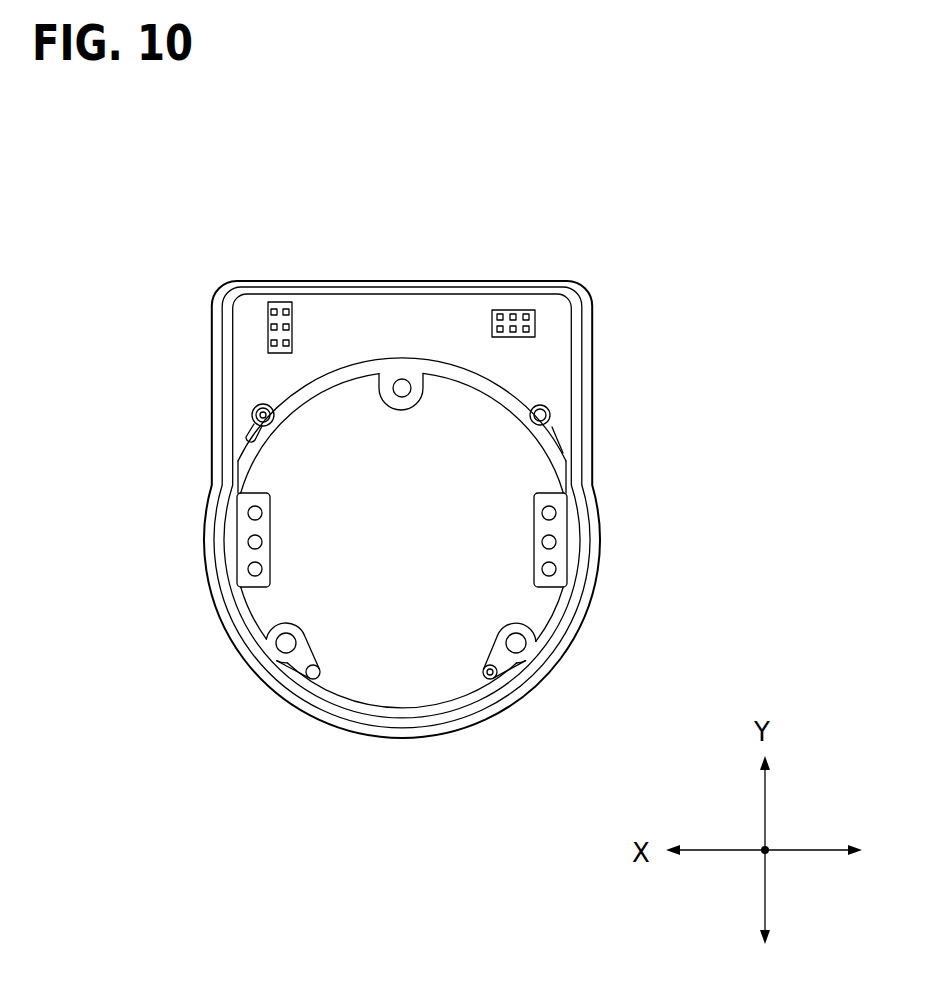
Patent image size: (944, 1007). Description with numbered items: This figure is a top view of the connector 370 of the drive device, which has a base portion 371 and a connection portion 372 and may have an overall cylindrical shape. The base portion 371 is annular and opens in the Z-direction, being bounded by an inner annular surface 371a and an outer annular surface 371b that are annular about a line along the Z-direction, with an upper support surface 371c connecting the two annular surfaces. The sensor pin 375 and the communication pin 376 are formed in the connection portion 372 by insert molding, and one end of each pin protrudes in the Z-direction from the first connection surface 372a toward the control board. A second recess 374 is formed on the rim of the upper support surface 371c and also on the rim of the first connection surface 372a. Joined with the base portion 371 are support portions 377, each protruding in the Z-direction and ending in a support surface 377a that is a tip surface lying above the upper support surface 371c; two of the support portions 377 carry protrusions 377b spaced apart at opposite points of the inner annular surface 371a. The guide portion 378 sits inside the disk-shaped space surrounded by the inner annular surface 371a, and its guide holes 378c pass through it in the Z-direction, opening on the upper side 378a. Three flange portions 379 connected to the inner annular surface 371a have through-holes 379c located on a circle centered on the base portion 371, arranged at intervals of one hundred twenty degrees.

The connector 370 is at (682, 198).
The base portion 371 is at (590, 545).
The inner annular surface 371a is at (345, 700).
The outer annular surface 371b is at (417, 739).
The upper support surface 371c is at (528, 660).
The connection portion 372 is at (592, 308).
The first connection surface 372a is at (463, 307).
The second recess 374 is at (578, 429).
The sensor pin 375 is at (268, 328).
The communication pin 376 is at (537, 318).
The support portions 377 is at (253, 410).
The support surface 377a is at (248, 440).
The protrusion 377b is at (252, 424).
The guide portion 378 is at (237, 493).
The upper side 378a is at (240, 538).
The guide holes 378c is at (255, 569).
The flange portions 379 is at (423, 398).
The through-holes 379c is at (537, 646).